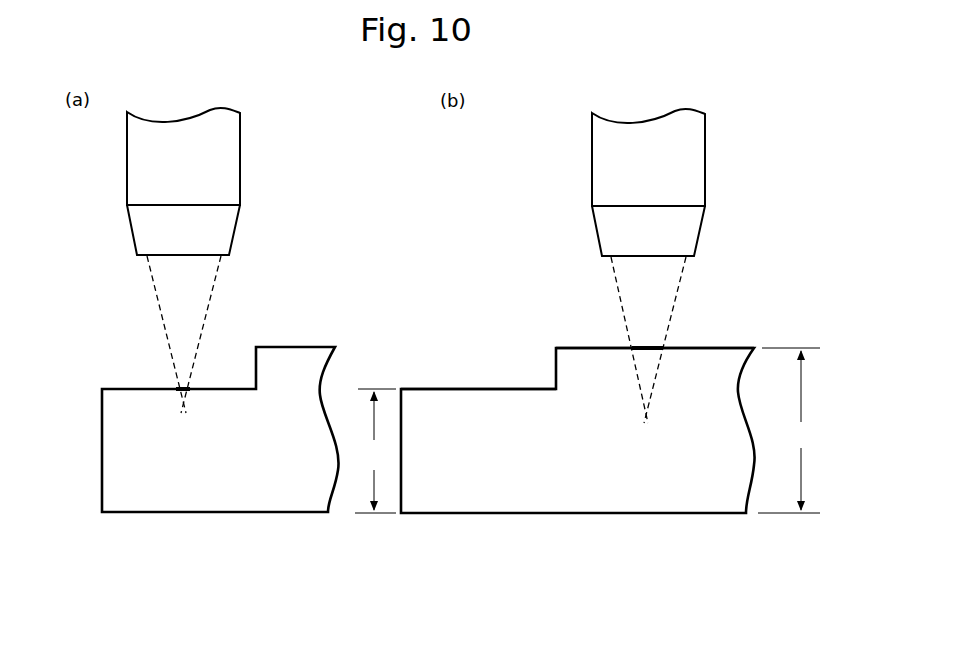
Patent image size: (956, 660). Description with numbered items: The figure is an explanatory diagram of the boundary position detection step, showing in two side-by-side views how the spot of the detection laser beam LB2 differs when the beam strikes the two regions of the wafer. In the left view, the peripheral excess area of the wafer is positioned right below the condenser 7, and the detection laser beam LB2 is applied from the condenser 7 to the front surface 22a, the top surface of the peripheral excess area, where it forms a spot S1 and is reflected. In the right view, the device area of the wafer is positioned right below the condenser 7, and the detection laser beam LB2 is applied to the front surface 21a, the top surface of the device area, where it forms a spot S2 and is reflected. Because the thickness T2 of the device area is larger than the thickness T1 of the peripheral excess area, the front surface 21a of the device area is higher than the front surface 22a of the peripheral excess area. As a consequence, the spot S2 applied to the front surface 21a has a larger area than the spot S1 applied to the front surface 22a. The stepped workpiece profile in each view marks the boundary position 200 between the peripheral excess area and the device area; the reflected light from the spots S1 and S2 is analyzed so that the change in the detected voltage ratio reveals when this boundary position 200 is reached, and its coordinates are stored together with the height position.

The condenser 7 is at (263, 154).
The detection laser beam LB2 is at (163, 320).
The boundary position 200 is at (258, 341).
The spot S1 is at (187, 388).
The spot S2 is at (648, 346).
The front surface of the peripheral excess area 22a is at (462, 388).
The front surface of the device area 21a is at (723, 347).
The thickness of the peripheral excess area T1 is at (375, 451).
The thickness of the device area T2 is at (789, 430).